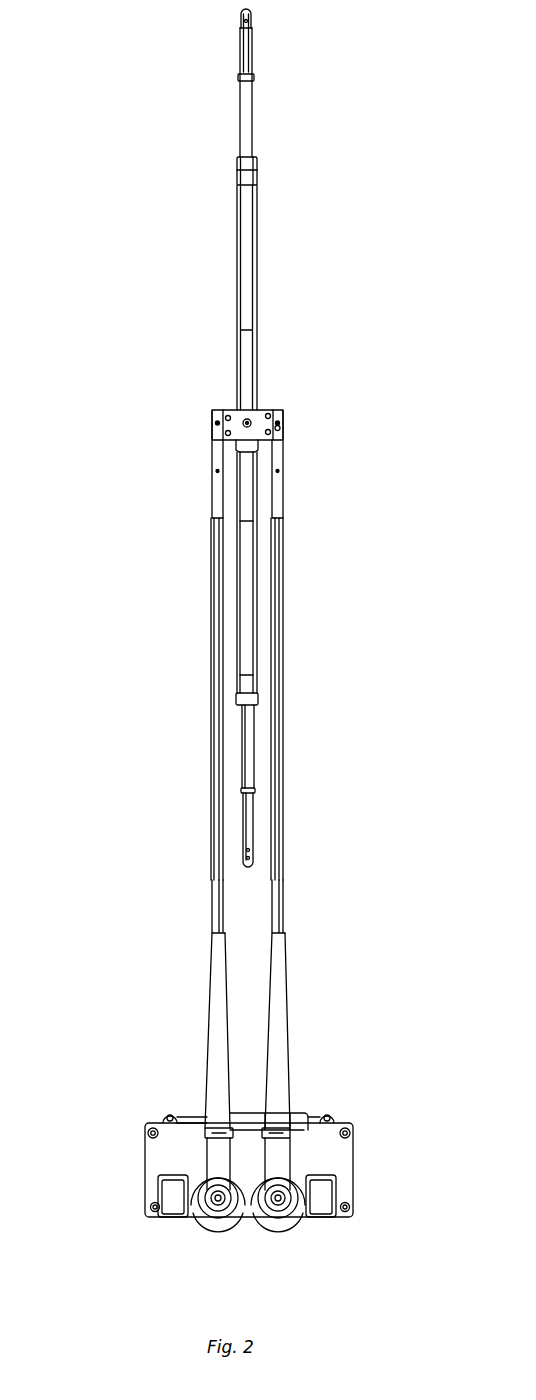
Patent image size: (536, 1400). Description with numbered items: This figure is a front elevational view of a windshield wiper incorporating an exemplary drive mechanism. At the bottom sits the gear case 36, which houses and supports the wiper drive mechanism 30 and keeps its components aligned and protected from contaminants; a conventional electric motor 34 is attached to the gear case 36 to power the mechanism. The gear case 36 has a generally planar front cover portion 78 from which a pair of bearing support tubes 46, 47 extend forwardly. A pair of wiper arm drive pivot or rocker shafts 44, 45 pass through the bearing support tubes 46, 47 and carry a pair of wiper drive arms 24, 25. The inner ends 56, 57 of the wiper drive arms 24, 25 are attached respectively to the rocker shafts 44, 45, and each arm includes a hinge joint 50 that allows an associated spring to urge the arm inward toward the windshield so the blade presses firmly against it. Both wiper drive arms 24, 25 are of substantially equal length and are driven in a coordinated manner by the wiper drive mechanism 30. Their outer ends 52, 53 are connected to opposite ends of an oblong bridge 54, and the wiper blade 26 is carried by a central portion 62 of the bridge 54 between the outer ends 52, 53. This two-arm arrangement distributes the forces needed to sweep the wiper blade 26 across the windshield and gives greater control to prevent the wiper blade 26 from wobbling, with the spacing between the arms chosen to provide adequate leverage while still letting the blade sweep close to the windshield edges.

The wiper drive arm 24 is at (212, 1042).
The wiper drive arm 25 is at (279, 497).
The wiper blade 26 is at (250, 350).
The wiper drive mechanism 30 is at (189, 1105).
The electric motor 34 is at (256, 1112).
The gear case 36 is at (349, 1212).
The rocker shaft 44 is at (214, 1158).
The rocker shaft 45 is at (298, 1172).
The bearing support tube 46 is at (206, 1220).
The bearing support tube 47 is at (284, 1220).
The hinge joint 50 is at (338, 1122).
The outer end 52 is at (216, 445).
The outer end 53 is at (280, 428).
The bridge 54 is at (270, 410).
The inner end 56 is at (206, 1165).
The inner end 57 is at (284, 1162).
The central portion 62 is at (244, 420).
The cover portion 78 is at (336, 1143).